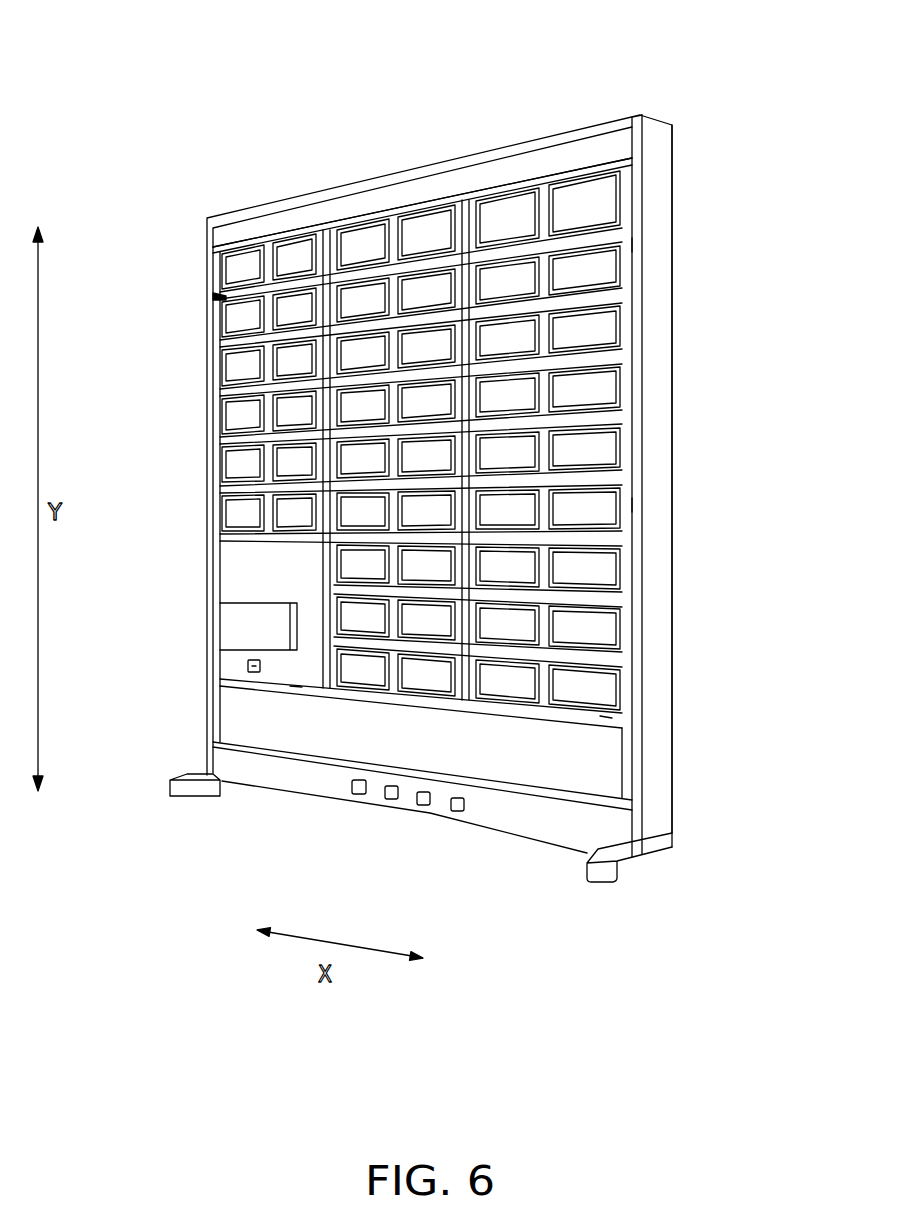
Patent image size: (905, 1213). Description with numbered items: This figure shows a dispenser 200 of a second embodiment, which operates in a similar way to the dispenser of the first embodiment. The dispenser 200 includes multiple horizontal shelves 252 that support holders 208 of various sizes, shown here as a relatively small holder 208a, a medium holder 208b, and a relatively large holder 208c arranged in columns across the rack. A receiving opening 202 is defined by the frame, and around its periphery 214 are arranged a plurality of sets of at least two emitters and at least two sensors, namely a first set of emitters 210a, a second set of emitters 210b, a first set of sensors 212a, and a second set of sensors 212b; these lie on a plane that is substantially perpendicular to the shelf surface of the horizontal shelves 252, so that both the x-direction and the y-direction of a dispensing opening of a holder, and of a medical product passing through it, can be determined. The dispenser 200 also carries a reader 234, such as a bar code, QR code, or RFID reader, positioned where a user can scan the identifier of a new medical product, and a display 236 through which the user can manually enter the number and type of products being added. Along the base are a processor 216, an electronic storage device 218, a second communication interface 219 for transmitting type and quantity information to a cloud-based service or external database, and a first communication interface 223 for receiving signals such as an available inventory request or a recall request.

The dispenser 200 is at (162, 186).
The receiving opening 202 is at (650, 156).
The holder 208 is at (522, 82).
The small holder 208a is at (307, 243).
The medium holder 208b is at (380, 230).
The large holder 208c is at (502, 215).
The first set of emitters 210a is at (252, 237).
The second set of emitters 210b is at (592, 158).
The first set of sensors 212a is at (650, 245).
The second set of sensors 212b is at (650, 505).
The periphery 214 is at (652, 690).
The processor 216 is at (358, 797).
The electronic storage device 218 is at (392, 802).
The second communication interface 219 is at (423, 808).
The first communication interface 223 is at (457, 813).
The reader 234 is at (247, 665).
The display 236 is at (255, 614).
The horizontal shelf 252 is at (257, 282).